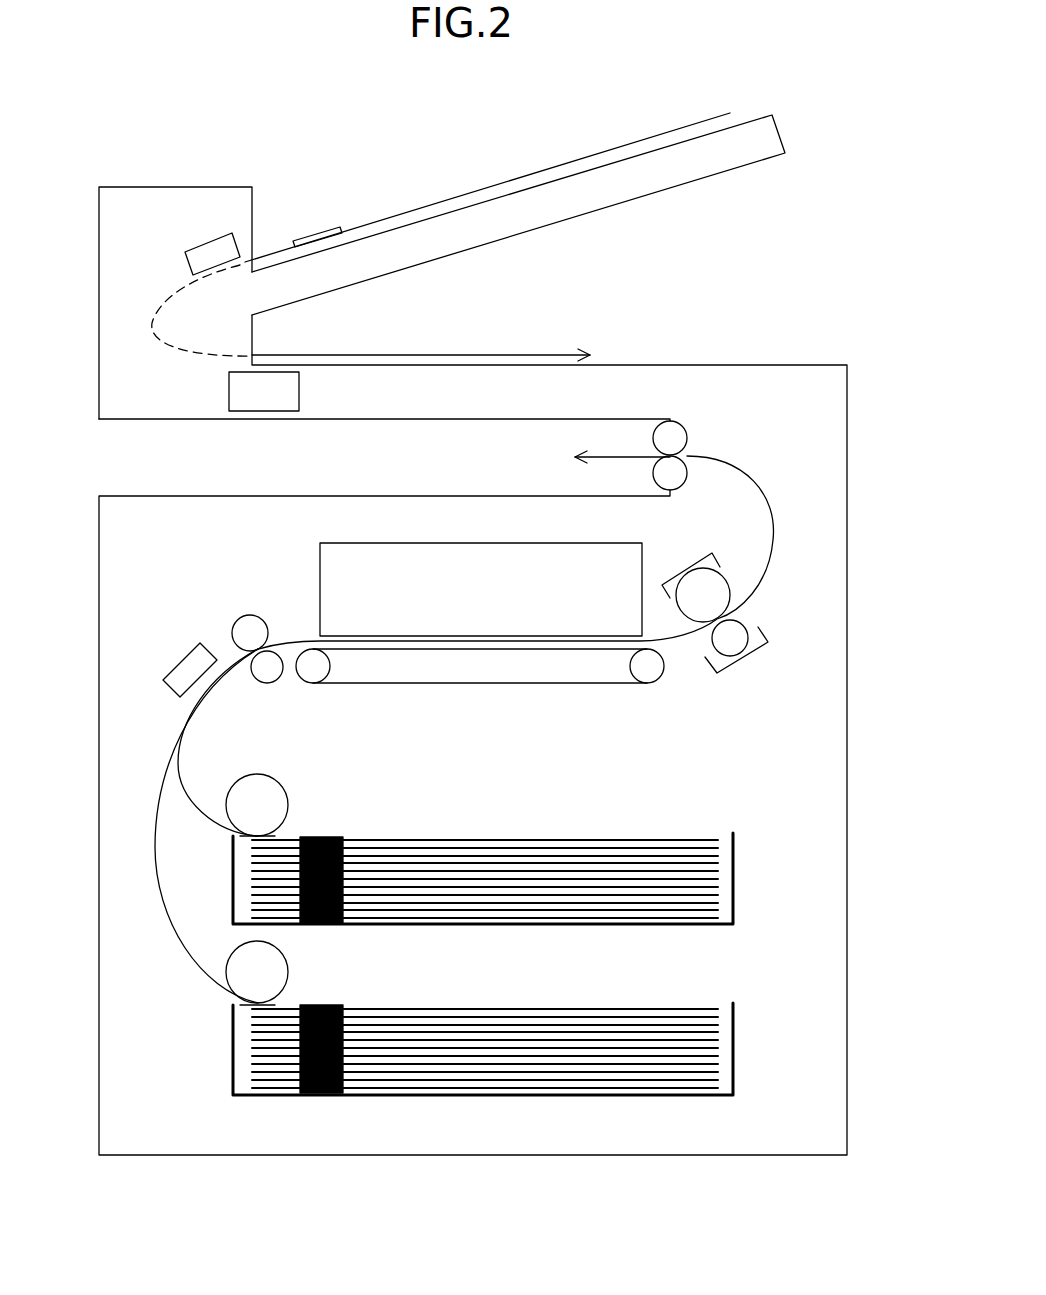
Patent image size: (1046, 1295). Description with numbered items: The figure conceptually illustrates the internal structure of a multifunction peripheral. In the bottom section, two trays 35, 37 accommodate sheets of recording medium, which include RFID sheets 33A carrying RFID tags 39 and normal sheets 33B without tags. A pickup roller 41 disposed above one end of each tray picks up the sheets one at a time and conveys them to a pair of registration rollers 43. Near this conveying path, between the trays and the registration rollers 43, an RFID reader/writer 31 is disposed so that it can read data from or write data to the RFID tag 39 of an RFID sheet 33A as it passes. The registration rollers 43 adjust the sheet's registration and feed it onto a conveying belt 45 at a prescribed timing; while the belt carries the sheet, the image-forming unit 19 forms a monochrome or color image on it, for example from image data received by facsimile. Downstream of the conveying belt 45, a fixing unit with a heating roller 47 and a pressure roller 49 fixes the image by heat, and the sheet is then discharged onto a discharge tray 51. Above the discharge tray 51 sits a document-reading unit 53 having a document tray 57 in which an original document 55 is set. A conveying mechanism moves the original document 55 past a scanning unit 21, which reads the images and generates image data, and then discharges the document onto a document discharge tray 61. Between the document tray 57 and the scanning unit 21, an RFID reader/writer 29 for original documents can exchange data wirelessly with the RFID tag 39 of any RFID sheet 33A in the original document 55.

The image-forming unit 19 is at (487, 550).
The scanning unit 21 is at (265, 402).
The RFID reader/writer for original documents 29 is at (207, 252).
The RFID reader/writer 31 is at (183, 670).
The RFID sheets 33A is at (502, 838).
The normal sheets 33B is at (485, 964).
The tray 35 is at (735, 870).
The tray 37 is at (735, 1043).
The RFID tag 39 is at (315, 235).
The pickup roller 41 is at (258, 780).
The registration rollers 43 is at (262, 670).
The conveying belt 45 is at (498, 675).
The heating roller 47 is at (720, 593).
The pressure roller 49 is at (733, 630).
The discharge tray 51 is at (401, 495).
The document-reading unit 53 is at (214, 156).
The original document 55 is at (546, 166).
The document tray 57 is at (741, 120).
The document discharge tray 61 is at (624, 364).